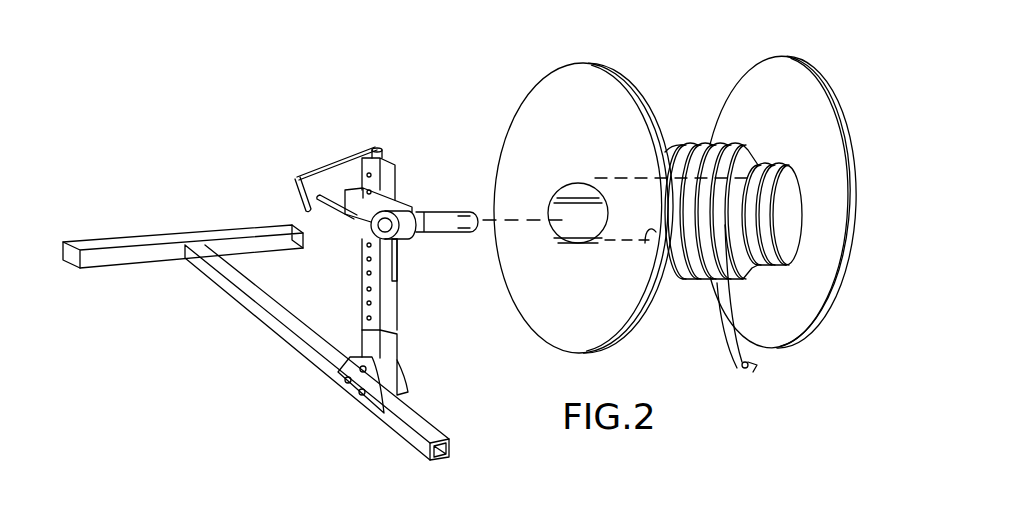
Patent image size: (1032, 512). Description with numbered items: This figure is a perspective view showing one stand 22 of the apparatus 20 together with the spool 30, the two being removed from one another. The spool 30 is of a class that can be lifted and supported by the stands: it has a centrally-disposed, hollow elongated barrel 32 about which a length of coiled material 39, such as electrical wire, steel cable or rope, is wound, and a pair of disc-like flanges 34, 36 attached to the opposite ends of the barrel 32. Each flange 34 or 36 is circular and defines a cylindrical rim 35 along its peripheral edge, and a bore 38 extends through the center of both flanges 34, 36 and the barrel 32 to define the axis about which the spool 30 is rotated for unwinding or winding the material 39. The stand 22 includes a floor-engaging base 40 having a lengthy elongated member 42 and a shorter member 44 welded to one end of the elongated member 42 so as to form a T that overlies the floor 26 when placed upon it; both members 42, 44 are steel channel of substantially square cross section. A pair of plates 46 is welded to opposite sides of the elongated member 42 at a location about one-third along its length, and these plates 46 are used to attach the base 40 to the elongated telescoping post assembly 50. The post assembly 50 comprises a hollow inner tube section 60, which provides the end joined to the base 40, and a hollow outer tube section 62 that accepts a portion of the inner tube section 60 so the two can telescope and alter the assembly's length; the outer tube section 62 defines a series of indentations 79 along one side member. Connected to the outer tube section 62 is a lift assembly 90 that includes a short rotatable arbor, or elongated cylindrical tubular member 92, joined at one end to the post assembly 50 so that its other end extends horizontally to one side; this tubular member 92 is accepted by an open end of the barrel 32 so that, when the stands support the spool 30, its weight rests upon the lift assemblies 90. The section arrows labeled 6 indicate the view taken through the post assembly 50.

The apparatus 20 is at (249, 113).
The stand 22 is at (318, 352).
The floor 26 is at (180, 246).
The shorter member 44 is at (112, 268).
The elongated member 42 is at (292, 345).
The floor-engaging base 40 is at (417, 423).
The plates 46 is at (350, 398).
The inner tube section 60 is at (388, 352).
The outer tube section 62 is at (385, 241).
The indentations 79 is at (367, 289).
The telescoping post assembly 50 is at (385, 156).
The lift assembly 90 is at (411, 240).
The tubular member 92 is at (453, 236).
The section line 6 is at (378, 146).
The spool 30 is at (680, 229).
The barrel 32 is at (632, 180).
The flange 34 is at (613, 353).
The flange 36 is at (810, 338).
The cylindrical rim 35 is at (860, 304).
The bore 38 is at (666, 287).
The wound material 39 is at (732, 366).